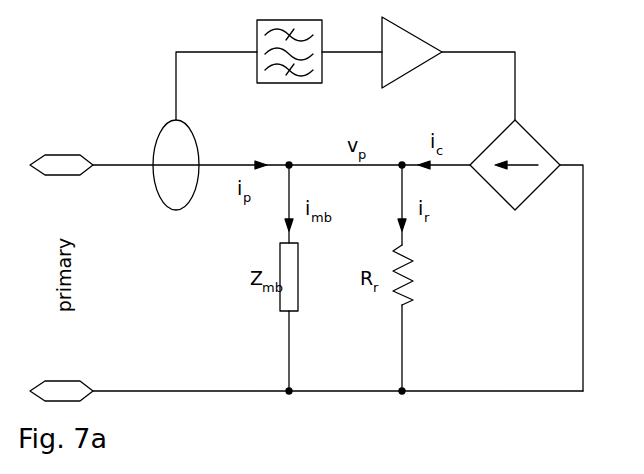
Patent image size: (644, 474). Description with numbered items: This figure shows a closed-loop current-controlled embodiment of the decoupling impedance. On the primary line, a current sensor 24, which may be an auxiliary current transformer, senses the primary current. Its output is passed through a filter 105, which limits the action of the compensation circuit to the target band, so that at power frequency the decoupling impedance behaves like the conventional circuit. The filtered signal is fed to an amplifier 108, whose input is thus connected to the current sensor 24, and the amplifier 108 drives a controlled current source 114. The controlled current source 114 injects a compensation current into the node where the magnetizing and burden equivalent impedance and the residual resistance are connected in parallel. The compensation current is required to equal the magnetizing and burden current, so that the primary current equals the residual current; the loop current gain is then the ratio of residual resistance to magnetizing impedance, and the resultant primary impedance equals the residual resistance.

The current sensor 24 is at (158, 135).
The filter 105 is at (262, 44).
The amplifier 108 is at (413, 68).
The controlled current source 114 is at (515, 198).